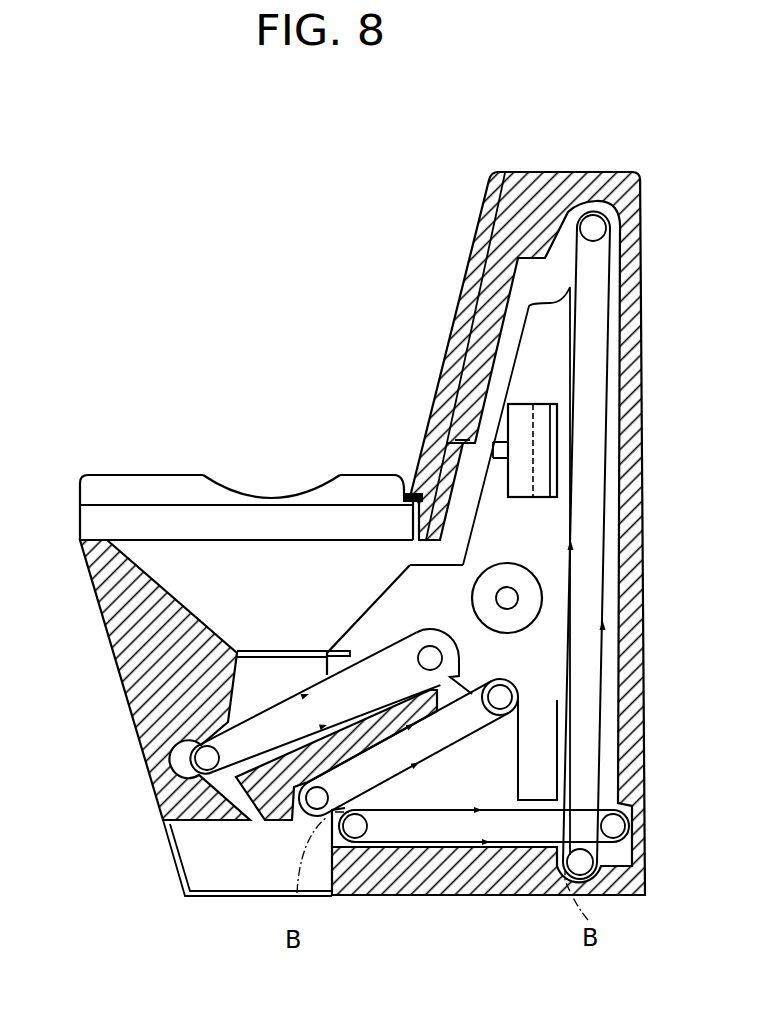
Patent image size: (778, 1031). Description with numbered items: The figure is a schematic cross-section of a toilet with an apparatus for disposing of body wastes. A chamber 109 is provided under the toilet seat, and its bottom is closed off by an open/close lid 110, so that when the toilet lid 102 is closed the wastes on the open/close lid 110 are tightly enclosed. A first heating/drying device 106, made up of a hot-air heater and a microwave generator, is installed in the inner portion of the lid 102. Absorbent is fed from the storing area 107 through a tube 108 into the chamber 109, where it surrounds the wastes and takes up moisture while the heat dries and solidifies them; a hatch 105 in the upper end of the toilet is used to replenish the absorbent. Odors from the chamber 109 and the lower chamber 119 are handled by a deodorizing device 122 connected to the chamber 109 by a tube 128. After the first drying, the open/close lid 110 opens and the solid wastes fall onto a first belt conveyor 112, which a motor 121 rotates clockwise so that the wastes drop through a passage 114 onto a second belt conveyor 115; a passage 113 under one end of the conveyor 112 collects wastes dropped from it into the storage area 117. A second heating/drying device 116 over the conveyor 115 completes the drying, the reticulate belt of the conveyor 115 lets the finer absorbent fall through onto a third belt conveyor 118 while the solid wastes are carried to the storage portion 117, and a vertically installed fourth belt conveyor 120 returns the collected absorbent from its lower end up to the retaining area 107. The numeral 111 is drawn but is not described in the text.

The toilet lid 102 is at (145, 493).
The hatch for replenishing absorbents 105 is at (540, 172).
The first heating/drying device 106 is at (285, 490).
The storing area 107 is at (525, 282).
The tube 108 is at (500, 357).
The chamber 109 is at (153, 562).
The open/close lid 110 is at (240, 654).
The seat belt conveyor 111 is at (262, 690).
The first belt conveyor 112 is at (248, 737).
The passage 113 is at (212, 793).
The passage 114 is at (450, 677).
The second belt conveyor 115 is at (480, 714).
The second heating/drying device 116 is at (376, 748).
The storage portion 117 is at (227, 863).
The third belt conveyor 118 is at (500, 832).
The chamber 119 is at (425, 753).
The fourth belt conveyor 120 is at (585, 758).
The motor 121 is at (532, 602).
The deodorizing device 122 is at (552, 453).
The tube 128 is at (455, 472).